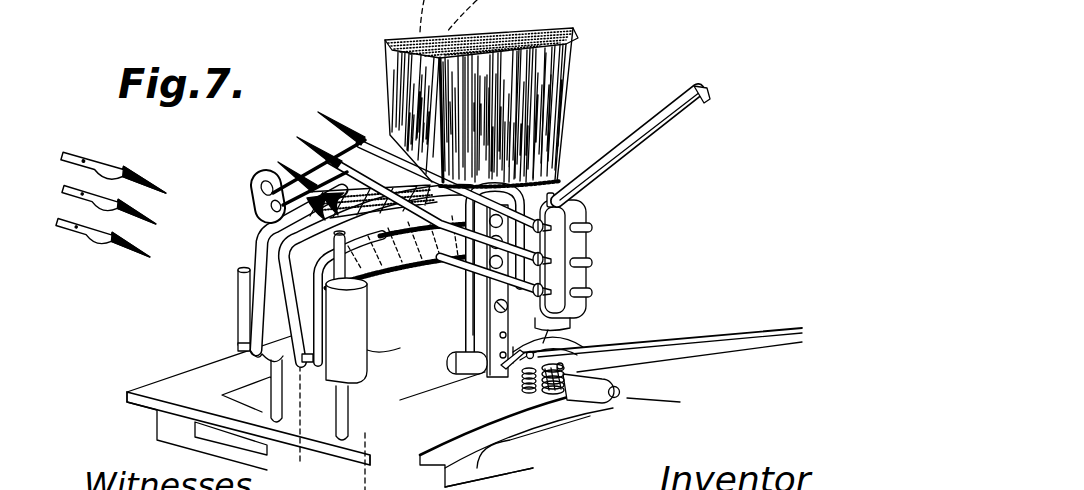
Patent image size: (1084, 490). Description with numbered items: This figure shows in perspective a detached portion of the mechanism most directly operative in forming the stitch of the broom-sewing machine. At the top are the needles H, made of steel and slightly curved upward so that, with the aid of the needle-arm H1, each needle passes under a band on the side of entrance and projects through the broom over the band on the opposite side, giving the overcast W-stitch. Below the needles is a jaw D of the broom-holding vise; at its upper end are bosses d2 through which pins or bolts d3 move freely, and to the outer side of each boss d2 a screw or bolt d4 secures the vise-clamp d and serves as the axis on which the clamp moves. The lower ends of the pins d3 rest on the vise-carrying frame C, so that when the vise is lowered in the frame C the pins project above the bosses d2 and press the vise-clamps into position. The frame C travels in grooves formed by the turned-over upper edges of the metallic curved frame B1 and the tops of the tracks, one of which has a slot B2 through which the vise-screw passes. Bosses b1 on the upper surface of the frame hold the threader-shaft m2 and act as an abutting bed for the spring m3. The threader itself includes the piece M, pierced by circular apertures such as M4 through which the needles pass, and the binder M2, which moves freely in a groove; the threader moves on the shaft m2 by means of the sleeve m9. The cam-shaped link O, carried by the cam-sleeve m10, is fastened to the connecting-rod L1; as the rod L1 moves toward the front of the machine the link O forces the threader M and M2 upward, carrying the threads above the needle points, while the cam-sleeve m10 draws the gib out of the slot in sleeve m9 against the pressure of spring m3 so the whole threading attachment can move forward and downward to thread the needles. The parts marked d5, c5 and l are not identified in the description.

The needle H is at (379, 151).
The needle-arm H1 is at (622, 214).
The vise-clamp d is at (331, 258).
The boss d2 is at (294, 326).
The pin or bolt d3 is at (263, 223).
The screw or bolt d4 is at (236, 345).
The legs d5 is at (309, 400).
The jaw of the vise D is at (383, 329).
The vise-carrying frame C is at (403, 411).
The slot in base c5 is at (231, 438).
The threader piece M is at (478, 320).
The binder M2 is at (497, 291).
The circular aperture M4 is at (470, 276).
The cam-shaped link O is at (582, 348).
The connecting-rod L1 is at (660, 348).
The boss b1 is at (600, 386).
The sleeve m9 is at (467, 363).
The cam-sleeve m10 is at (508, 365).
The spring m3 is at (521, 390).
The threader-shaft m2 is at (550, 394).
The metallic curved frame B1 is at (533, 442).
The slot B2 is at (489, 468).
The pin l is at (566, 363).